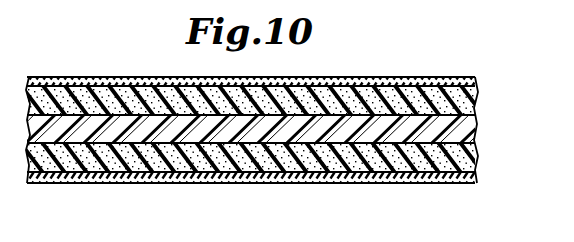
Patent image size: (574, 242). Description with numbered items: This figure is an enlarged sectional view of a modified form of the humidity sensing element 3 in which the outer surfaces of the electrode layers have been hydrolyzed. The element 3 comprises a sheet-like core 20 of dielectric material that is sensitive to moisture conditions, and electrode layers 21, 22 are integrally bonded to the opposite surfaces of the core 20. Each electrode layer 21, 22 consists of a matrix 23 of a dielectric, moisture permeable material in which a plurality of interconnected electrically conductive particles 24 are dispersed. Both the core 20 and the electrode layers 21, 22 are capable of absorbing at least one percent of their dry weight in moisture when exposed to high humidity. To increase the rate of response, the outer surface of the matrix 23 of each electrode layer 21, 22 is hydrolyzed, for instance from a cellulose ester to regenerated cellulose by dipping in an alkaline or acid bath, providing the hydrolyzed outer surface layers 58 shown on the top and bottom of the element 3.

The humidity sensing element 3 is at (424, 74).
The core 20 is at (462, 133).
The electrode layer 21 is at (481, 80).
The electrode layer 22 is at (481, 144).
The matrix 23 is at (62, 78).
The electrically conductive particles 24 is at (124, 93).
The hydrolyzed outer surface layer 58 is at (454, 82).